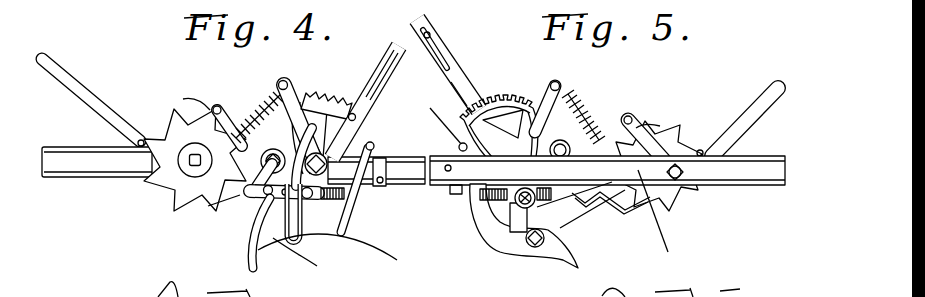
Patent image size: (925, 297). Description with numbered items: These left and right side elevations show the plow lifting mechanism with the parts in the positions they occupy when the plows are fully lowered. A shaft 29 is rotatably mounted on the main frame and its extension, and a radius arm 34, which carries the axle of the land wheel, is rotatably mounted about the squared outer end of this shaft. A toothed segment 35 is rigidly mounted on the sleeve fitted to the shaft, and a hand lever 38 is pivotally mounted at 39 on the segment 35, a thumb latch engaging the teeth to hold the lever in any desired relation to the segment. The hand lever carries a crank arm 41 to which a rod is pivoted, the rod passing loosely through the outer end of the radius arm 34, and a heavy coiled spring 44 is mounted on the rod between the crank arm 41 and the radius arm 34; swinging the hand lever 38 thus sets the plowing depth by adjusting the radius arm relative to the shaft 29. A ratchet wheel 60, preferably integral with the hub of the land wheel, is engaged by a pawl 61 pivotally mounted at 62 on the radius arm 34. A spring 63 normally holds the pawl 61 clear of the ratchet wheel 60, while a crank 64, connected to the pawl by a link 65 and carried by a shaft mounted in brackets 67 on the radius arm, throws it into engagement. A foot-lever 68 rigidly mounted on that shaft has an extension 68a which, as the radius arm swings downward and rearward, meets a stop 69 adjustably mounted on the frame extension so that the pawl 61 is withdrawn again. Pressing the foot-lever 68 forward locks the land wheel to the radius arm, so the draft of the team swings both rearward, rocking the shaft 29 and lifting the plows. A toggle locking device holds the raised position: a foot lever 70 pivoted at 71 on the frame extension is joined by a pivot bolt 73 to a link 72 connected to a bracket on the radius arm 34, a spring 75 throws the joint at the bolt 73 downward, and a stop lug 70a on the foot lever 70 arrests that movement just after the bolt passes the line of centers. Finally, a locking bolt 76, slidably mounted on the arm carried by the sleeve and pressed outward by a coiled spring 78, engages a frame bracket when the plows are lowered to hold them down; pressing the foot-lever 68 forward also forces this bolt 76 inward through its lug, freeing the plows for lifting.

In FIG. 5, the shaft 29 is at (526, 190).
In FIG. 4, the radius arm 34 is at (208, 213).
In FIG. 5, the radius arm 34 is at (575, 188).
In FIG. 4, the toothed segment 35 is at (334, 105).
In FIG. 5, the toothed segment 35 is at (490, 100).
In FIG. 4, the hand lever 38 is at (392, 58).
In FIG. 5, the hand lever 38 is at (428, 31).
In FIG. 4, the pivot 39 is at (377, 147).
In FIG. 4, the crank arm 41 is at (318, 95).
In FIG. 5, the crank arm 41 is at (548, 86).
In FIG. 4, the coiled spring 44 is at (252, 97).
In FIG. 5, the coiled spring 44 is at (585, 100).
In FIG. 4, the ratchet wheel 60 is at (173, 183).
In FIG. 5, the ratchet wheel 60 is at (675, 210).
In FIG. 4, the pawl 61 is at (255, 200).
In FIG. 5, the pawl 61 is at (655, 204).
In FIG. 4, the pivot 62 is at (248, 198).
In FIG. 4, the spring 63 is at (275, 149).
In FIG. 5, the spring 63 is at (560, 140).
In FIG. 4, the crank 64 is at (339, 253).
In FIG. 4, the link 65 is at (266, 242).
In FIG. 4, the arms or brackets 67 is at (308, 228).
In FIG. 5, the arms or brackets 67 is at (572, 204).
In FIG. 4, the foot-lever 68 is at (374, 146).
In FIG. 4, the extension 68a is at (313, 256).
In FIG. 5, the extension 68a is at (572, 248).
In FIG. 4, the stop 69 is at (376, 170).
In FIG. 4, the foot lever 70 is at (66, 69).
In FIG. 5, the foot lever 70 is at (747, 106).
In FIG. 4, the stop lug 70a is at (144, 140).
In FIG. 5, the stop lug 70a is at (701, 150).
In FIG. 5, the pivot 71 is at (680, 186).
In FIG. 4, the link 72 is at (215, 104).
In FIG. 5, the link 72 is at (612, 126).
In FIG. 4, the pivot bolt 73 is at (178, 99).
In FIG. 5, the pivot bolt 73 is at (630, 138).
In FIG. 5, the spring 75 is at (666, 218).
In FIG. 4, the bolt 76 is at (367, 203).
In FIG. 5, the coiled spring 78 is at (520, 205).